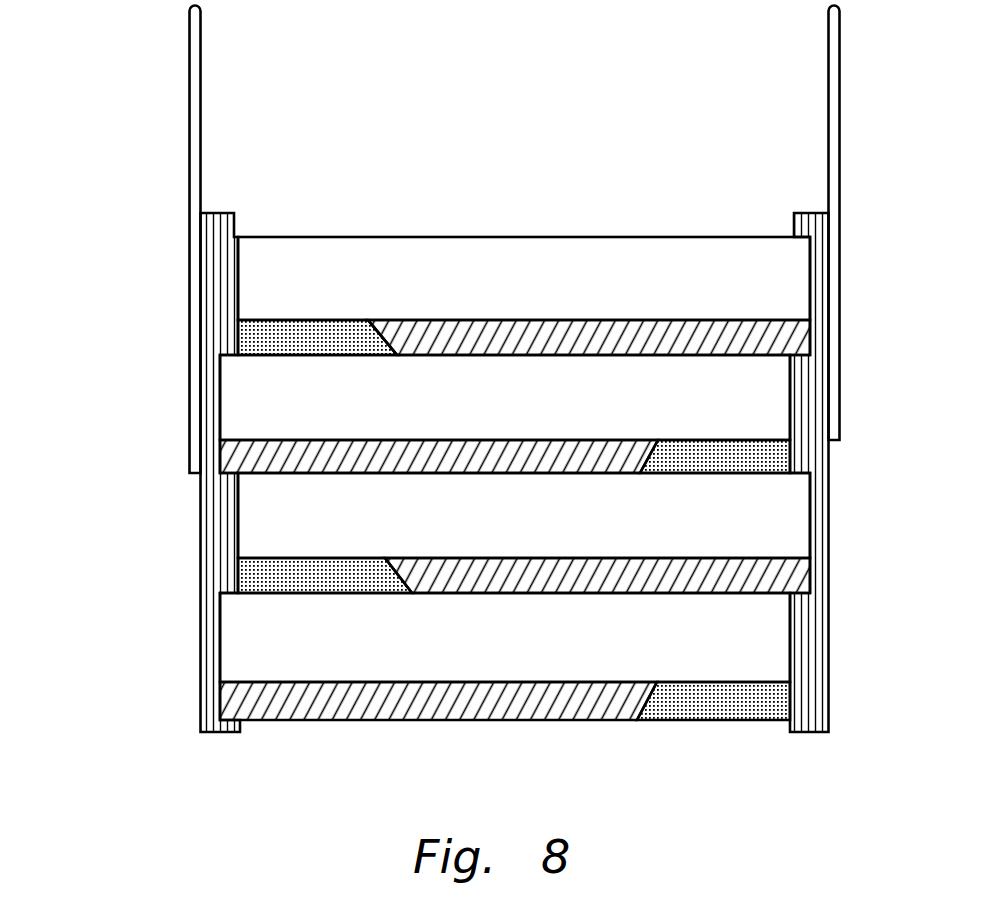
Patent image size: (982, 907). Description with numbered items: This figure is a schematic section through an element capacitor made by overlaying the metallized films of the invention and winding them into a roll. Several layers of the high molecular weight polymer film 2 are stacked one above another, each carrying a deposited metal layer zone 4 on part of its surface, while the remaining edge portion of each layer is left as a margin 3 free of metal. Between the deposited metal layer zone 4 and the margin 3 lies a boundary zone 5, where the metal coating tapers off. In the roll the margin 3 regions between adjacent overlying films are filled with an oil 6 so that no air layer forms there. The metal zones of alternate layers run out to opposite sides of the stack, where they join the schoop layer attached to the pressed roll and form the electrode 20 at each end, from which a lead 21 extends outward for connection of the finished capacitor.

The high molecular weight polymer film 2 is at (413, 657).
The margin 3 is at (310, 558).
The deposited metal layer zone 4 is at (653, 340).
The boundary zone 5 is at (402, 332).
The oil 6 is at (315, 342).
The external electrode (collector terminal) 20 is at (210, 570).
The lead terminal 21 is at (190, 92).